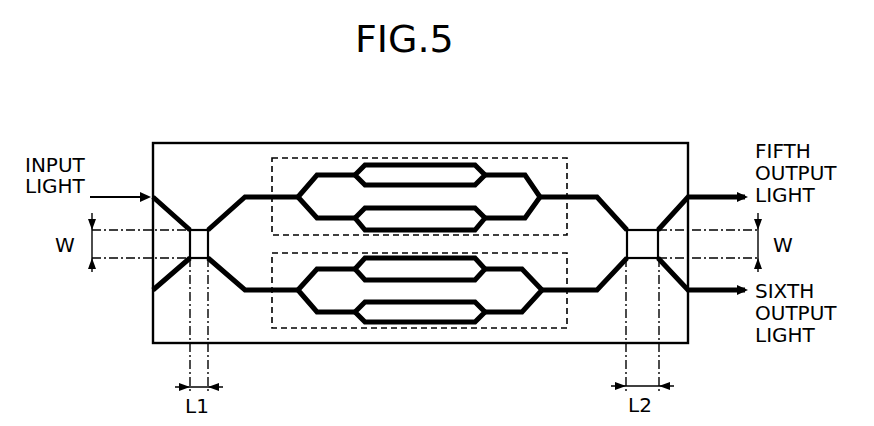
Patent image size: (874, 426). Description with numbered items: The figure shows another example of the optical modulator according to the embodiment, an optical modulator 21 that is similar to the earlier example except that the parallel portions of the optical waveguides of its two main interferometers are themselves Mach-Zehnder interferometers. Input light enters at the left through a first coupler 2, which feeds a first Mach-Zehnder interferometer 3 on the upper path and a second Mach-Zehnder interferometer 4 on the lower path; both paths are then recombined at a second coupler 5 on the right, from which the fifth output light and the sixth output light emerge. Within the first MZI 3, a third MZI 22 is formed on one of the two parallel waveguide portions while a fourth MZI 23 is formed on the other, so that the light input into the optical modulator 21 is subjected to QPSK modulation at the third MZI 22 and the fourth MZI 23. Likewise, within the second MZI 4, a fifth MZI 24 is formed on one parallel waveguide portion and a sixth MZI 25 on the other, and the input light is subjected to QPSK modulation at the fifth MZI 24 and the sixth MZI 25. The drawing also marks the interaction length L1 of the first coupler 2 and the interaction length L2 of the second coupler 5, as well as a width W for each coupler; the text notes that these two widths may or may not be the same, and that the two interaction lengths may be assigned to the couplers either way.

The first coupler 2 is at (198, 230).
The first Mach-Zehnder interferometer 3 is at (419, 161).
The second Mach-Zehnder interferometer 4 is at (419, 327).
The second coupler 5 is at (640, 230).
The optical modulator 21 is at (494, 104).
The third Mach-Zehnder interferometer 22 is at (410, 165).
The fourth Mach-Zehnder interferometer 23 is at (483, 208).
The fifth Mach-Zehnder interferometer 24 is at (478, 280).
The sixth Mach-Zehnder interferometer 25 is at (410, 323).